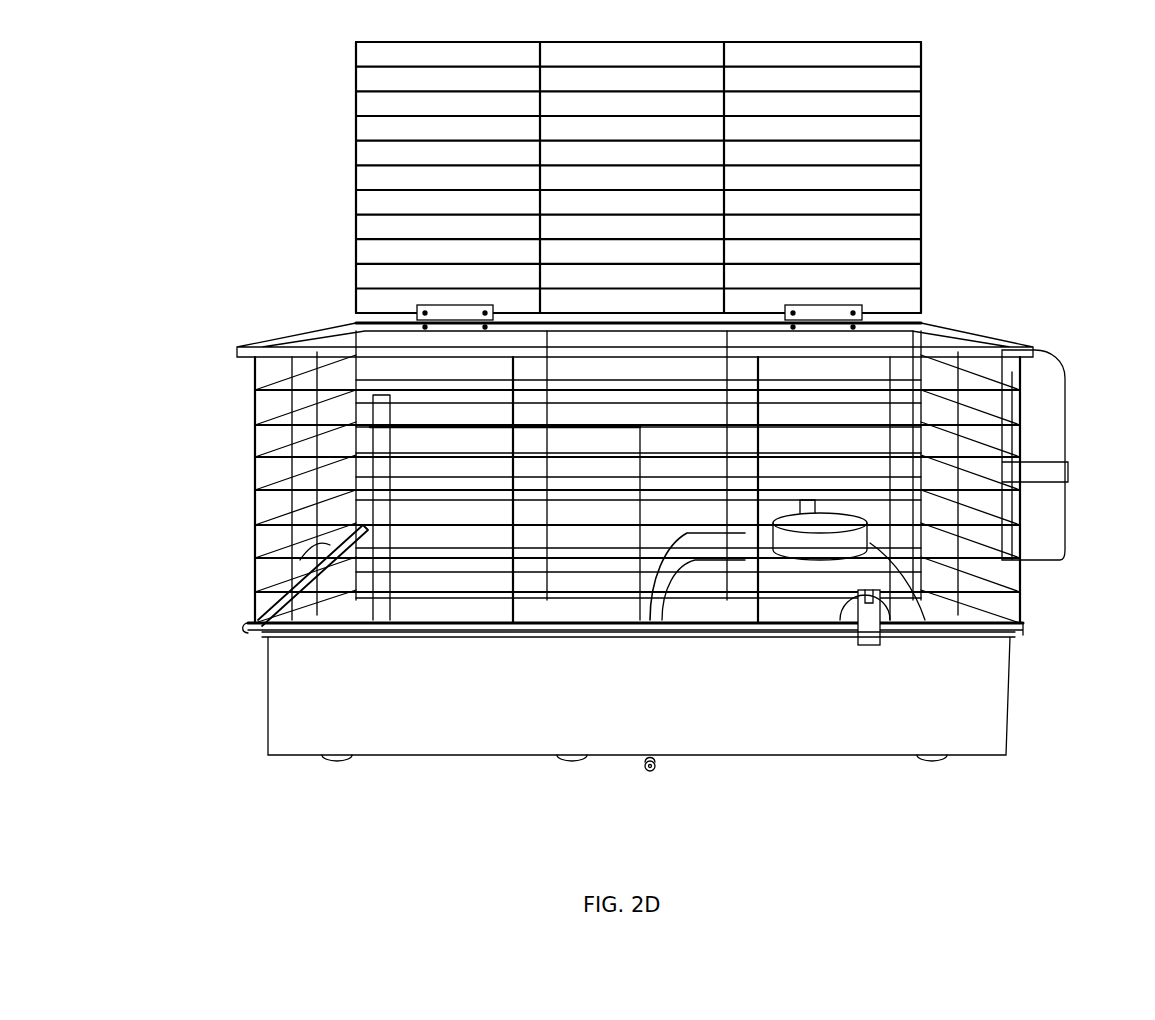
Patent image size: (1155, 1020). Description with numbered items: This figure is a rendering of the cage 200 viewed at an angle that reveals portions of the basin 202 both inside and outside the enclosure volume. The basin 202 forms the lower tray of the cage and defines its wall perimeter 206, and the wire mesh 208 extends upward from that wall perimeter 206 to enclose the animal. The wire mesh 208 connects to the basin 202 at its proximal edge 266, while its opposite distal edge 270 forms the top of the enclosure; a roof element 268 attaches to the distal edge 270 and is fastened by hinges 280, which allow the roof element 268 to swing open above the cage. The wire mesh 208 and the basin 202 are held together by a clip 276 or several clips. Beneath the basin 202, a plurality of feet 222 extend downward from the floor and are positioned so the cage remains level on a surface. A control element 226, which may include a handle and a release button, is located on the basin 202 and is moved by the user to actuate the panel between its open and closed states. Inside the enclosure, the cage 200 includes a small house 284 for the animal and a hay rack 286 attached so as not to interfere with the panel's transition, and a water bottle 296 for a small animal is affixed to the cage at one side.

The cage 200 is at (960, 92).
The basin 202 is at (275, 678).
The wall perimeter 206 is at (295, 730).
The wire mesh 208 is at (256, 404).
The feet 222 is at (345, 760).
The control element 226 is at (656, 773).
The proximal edge 266 is at (255, 628).
The roof element 268 is at (356, 133).
The distal edge 270 is at (252, 362).
The clip 276 is at (872, 648).
The hinges 280 is at (447, 312).
The small house 284 is at (718, 540).
The hay rack 286 is at (410, 415).
The water bottle 296 is at (1050, 402).